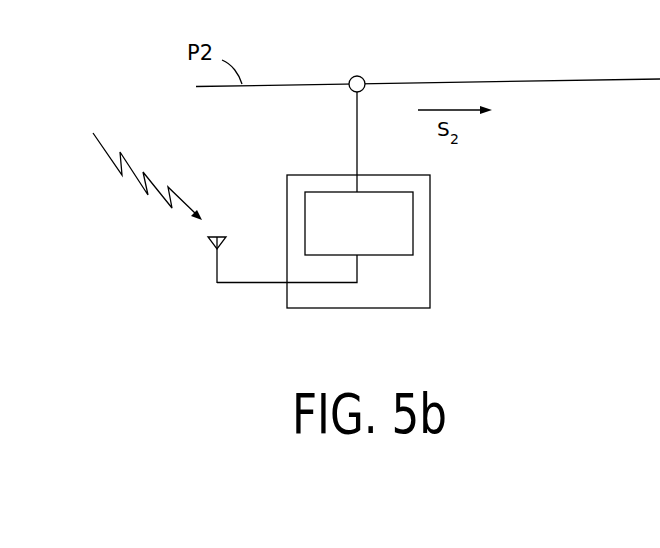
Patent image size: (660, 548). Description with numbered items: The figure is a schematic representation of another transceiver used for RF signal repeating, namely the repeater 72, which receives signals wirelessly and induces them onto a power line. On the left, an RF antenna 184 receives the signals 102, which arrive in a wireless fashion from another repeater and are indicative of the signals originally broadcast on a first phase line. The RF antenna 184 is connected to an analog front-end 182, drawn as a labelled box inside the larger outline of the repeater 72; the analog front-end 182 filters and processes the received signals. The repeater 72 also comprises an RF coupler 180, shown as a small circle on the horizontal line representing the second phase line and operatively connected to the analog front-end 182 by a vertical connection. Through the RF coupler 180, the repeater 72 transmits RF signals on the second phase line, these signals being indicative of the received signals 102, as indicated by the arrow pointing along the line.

The RF coupler 180 is at (359, 77).
The analog front-end 182 is at (413, 215).
The repeater 72 is at (430, 236).
The signals 102 is at (157, 184).
The RF antenna 184 is at (217, 274).